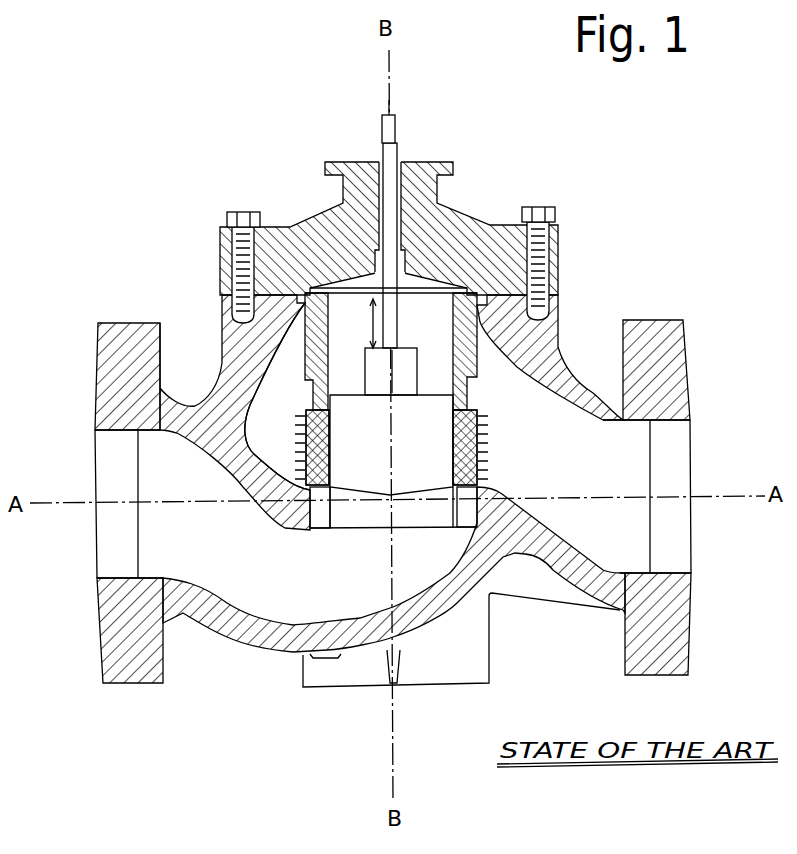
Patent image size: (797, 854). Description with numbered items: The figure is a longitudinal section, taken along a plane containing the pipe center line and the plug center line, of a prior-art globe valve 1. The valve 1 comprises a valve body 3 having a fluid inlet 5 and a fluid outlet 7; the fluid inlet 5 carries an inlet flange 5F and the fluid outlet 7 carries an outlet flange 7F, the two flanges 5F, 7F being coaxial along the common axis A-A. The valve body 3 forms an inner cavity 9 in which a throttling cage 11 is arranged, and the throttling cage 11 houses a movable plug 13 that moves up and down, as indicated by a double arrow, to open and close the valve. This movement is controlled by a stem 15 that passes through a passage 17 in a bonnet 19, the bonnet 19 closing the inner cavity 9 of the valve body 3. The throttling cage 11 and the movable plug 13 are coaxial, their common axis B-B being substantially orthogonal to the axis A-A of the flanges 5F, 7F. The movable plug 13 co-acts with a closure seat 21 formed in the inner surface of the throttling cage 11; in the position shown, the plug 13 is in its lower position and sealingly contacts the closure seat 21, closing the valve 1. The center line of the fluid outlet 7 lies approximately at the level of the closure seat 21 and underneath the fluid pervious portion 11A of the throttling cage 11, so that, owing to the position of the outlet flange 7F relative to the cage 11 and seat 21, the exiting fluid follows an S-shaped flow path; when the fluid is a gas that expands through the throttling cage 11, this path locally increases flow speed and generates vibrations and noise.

The valve 1 is at (207, 186).
The valve body 3 is at (266, 638).
The fluid inlet 5 is at (185, 549).
The inlet flange 5F is at (103, 628).
The fluid outlet 7 is at (622, 483).
The outlet flange 7F is at (690, 360).
The inner cavity 9 is at (283, 408).
The throttling cage 11 is at (477, 372).
The fluid pervious portion 11A is at (495, 412).
The movable plug 13 is at (368, 488).
The stem 15 is at (398, 152).
The passage 17 is at (410, 185).
The bonnet 19 is at (280, 228).
The closure seat 21 is at (460, 500).